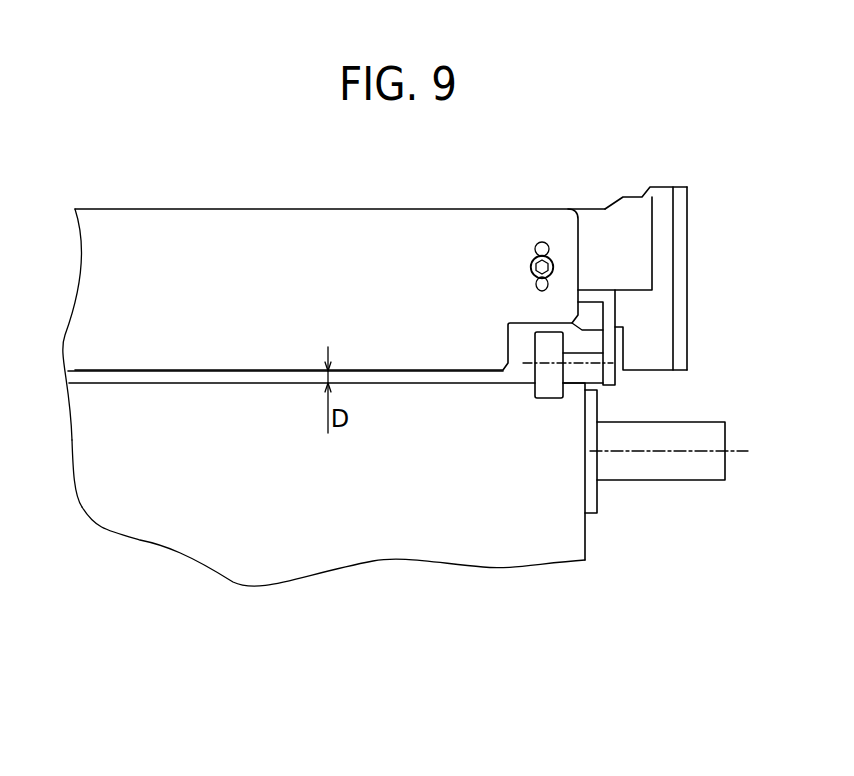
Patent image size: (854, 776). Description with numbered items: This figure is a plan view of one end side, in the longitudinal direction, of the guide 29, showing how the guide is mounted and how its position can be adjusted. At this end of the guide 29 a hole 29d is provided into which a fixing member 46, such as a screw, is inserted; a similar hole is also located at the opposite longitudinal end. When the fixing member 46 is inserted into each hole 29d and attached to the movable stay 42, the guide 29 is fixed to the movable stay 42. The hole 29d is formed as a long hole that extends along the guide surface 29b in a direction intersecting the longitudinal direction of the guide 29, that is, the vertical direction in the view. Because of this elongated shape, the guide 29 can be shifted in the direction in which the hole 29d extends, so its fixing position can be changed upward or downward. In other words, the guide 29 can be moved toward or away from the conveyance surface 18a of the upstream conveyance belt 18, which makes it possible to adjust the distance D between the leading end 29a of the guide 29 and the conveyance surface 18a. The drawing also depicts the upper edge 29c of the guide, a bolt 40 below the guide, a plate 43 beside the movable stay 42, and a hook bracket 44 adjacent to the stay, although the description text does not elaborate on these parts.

The upstream conveyance belt 18 is at (588, 532).
The conveyance surface 18a is at (374, 537).
The guide 29 is at (580, 238).
The leading end 29a is at (214, 371).
The guide surface 29b is at (328, 238).
The upper surface of guide plate 29c is at (210, 206).
The hole 29d is at (552, 279).
The fixing bolt 40 is at (551, 398).
The movable stay 42 is at (652, 227).
The mounting plate 43 is at (687, 283).
The hook bracket 44 is at (617, 343).
The fixing member 46 is at (533, 258).